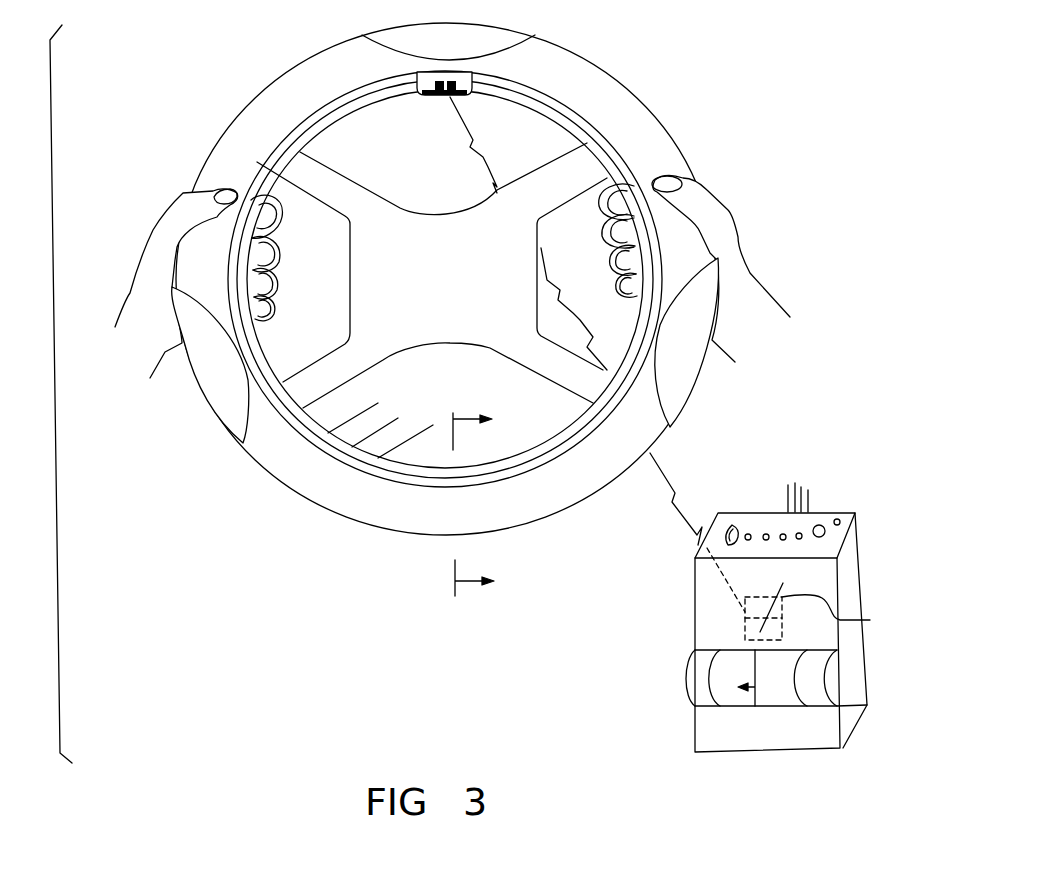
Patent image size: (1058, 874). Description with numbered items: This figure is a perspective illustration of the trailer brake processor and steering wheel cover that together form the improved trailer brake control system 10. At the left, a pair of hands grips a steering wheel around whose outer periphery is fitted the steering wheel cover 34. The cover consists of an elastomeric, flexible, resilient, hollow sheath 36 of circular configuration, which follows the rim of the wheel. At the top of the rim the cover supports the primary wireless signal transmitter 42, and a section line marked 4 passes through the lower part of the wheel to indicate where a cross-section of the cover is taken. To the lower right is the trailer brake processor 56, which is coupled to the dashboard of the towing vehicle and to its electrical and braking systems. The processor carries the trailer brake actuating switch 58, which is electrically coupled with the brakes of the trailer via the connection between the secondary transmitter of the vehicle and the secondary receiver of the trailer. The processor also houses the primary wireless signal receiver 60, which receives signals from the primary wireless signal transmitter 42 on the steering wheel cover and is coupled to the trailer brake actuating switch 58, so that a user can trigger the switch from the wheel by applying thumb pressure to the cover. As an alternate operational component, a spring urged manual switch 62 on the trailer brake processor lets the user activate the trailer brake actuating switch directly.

The trailer brake control system 10 is at (409, 268).
The steering wheel cover 34 is at (240, 112).
The sheath 36 is at (590, 97).
The primary wireless signal transmitter 42 is at (438, 97).
The section line 4- 4 is at (461, 504).
The trailer brake processor 56 is at (842, 580).
The trailer brake actuating switch 58 is at (763, 512).
The primary wireless signal receiver 60 is at (825, 611).
The spring urged manual switch 62 is at (742, 673).